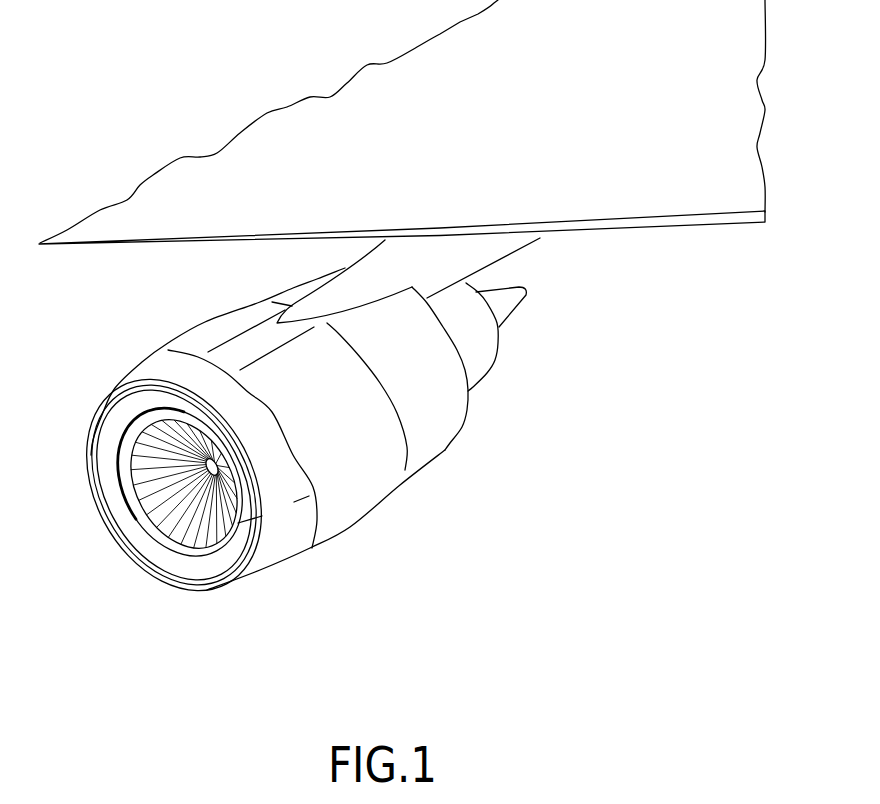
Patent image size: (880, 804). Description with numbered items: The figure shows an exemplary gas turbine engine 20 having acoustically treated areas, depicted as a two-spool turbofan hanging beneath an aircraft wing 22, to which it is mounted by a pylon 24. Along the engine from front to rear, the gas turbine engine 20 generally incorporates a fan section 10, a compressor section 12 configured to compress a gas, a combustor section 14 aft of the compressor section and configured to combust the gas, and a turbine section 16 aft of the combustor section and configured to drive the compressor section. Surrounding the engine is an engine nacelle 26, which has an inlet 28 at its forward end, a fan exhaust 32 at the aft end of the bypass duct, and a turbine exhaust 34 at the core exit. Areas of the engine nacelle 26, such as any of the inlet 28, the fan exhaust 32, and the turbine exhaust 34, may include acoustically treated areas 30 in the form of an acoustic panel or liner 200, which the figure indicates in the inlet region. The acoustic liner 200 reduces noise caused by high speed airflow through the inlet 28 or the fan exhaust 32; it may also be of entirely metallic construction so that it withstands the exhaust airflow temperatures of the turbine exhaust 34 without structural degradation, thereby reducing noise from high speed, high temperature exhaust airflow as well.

The fan section 10 is at (277, 453).
The compressor section 12 is at (318, 402).
The combustor section 14 is at (403, 402).
The turbine section 16 is at (442, 360).
The gas turbine engine 20 is at (165, 317).
The aircraft wing 22 is at (273, 118).
The pylon 24 is at (500, 252).
The engine nacelle 26 is at (371, 499).
The inlet 28 is at (116, 457).
The acoustically treated areas 30 is at (509, 340).
The fan exhaust 32 is at (489, 405).
The turbine exhaust 34 is at (533, 310).
The acoustic liner 200 is at (200, 567).